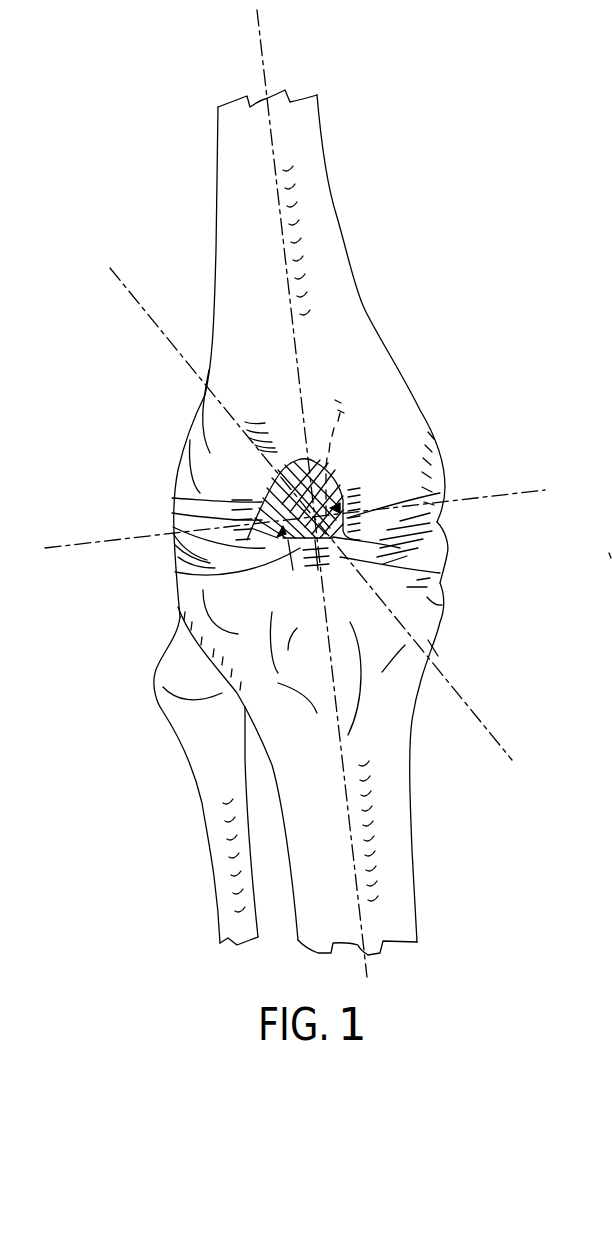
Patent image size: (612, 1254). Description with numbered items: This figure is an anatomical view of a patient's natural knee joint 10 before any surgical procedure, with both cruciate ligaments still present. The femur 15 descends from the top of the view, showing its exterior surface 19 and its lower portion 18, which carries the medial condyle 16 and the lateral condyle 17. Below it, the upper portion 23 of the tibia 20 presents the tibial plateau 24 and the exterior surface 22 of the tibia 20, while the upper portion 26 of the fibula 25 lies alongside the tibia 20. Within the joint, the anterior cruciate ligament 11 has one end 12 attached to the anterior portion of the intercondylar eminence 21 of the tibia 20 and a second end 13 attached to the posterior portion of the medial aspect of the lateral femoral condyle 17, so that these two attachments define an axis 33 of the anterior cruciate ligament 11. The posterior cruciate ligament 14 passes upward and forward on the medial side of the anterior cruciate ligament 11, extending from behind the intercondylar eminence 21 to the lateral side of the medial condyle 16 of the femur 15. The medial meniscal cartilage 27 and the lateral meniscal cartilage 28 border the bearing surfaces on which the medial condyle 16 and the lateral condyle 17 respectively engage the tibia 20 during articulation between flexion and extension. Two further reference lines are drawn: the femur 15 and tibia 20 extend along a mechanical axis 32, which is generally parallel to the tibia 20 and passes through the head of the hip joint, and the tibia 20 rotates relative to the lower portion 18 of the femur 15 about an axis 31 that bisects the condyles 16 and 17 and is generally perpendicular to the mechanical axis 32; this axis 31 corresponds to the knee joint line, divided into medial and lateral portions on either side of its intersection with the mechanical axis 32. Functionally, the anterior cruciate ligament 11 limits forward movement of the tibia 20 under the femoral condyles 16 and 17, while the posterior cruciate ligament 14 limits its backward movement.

The knee joint 10 is at (328, 493).
The anterior cruciate ligament 11 is at (290, 542).
The one end of the anterior cruciate ligament 12 is at (333, 537).
The second end of the anterior cruciate ligament 13 is at (262, 492).
The posterior cruciate ligament 14 is at (445, 484).
The femur 15 is at (222, 172).
The medial condyle 16 is at (445, 467).
The lateral condyle 17 is at (200, 493).
The lower portion of the femur 18 is at (210, 453).
The exterior surface of the femur 19 is at (205, 396).
The tibia 20 is at (395, 826).
The intercondylar eminence 21 is at (440, 573).
The exterior surface of the tibia 22 is at (433, 647).
The upper portion of the tibia 23 is at (440, 620).
The tibial plateau 24 is at (277, 539).
The fibula 25 is at (222, 906).
The upper portion of the fibula 26 is at (158, 676).
The medial meniscal cartilage 27 is at (450, 538).
The lateral meniscal cartilage 28 is at (170, 550).
The axis 31 is at (512, 490).
The mechanical axis 32 is at (258, 33).
The axis of the anterior cruciate ligament 33 is at (512, 755).